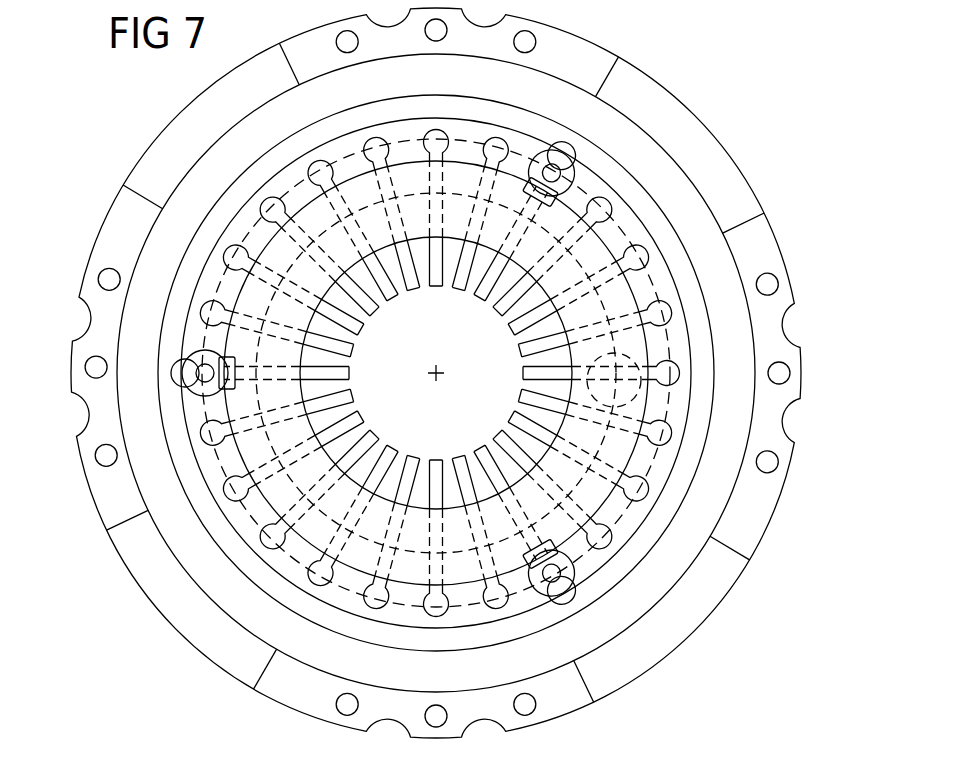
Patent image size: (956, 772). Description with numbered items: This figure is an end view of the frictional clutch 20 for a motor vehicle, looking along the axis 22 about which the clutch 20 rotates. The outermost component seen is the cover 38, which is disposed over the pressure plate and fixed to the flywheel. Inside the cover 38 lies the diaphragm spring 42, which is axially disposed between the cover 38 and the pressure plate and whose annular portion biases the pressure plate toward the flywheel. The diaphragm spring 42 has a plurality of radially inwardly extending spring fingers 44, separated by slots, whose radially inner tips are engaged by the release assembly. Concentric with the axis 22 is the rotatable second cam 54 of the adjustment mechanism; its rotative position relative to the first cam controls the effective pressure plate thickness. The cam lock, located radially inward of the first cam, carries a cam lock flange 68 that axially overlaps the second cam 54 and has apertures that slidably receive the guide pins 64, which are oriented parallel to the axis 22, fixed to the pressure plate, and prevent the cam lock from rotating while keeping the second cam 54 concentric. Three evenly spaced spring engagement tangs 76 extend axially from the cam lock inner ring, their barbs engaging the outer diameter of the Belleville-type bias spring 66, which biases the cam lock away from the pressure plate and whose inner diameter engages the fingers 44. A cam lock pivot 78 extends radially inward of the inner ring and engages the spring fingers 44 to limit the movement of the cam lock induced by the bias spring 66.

The frictional clutch 20 is at (76, 179).
The axis 22 is at (440, 366).
The cover 38 is at (756, 190).
The diaphragm spring 42 is at (618, 489).
The spring fingers 44 is at (436, 404).
The second cam 54 is at (612, 533).
The guide pins 64 is at (566, 177).
The bias spring 66 is at (302, 540).
The cam lock flange 68 is at (567, 594).
The spring engagement tangs 76 is at (574, 188).
The cam lock pivot 78 is at (636, 396).